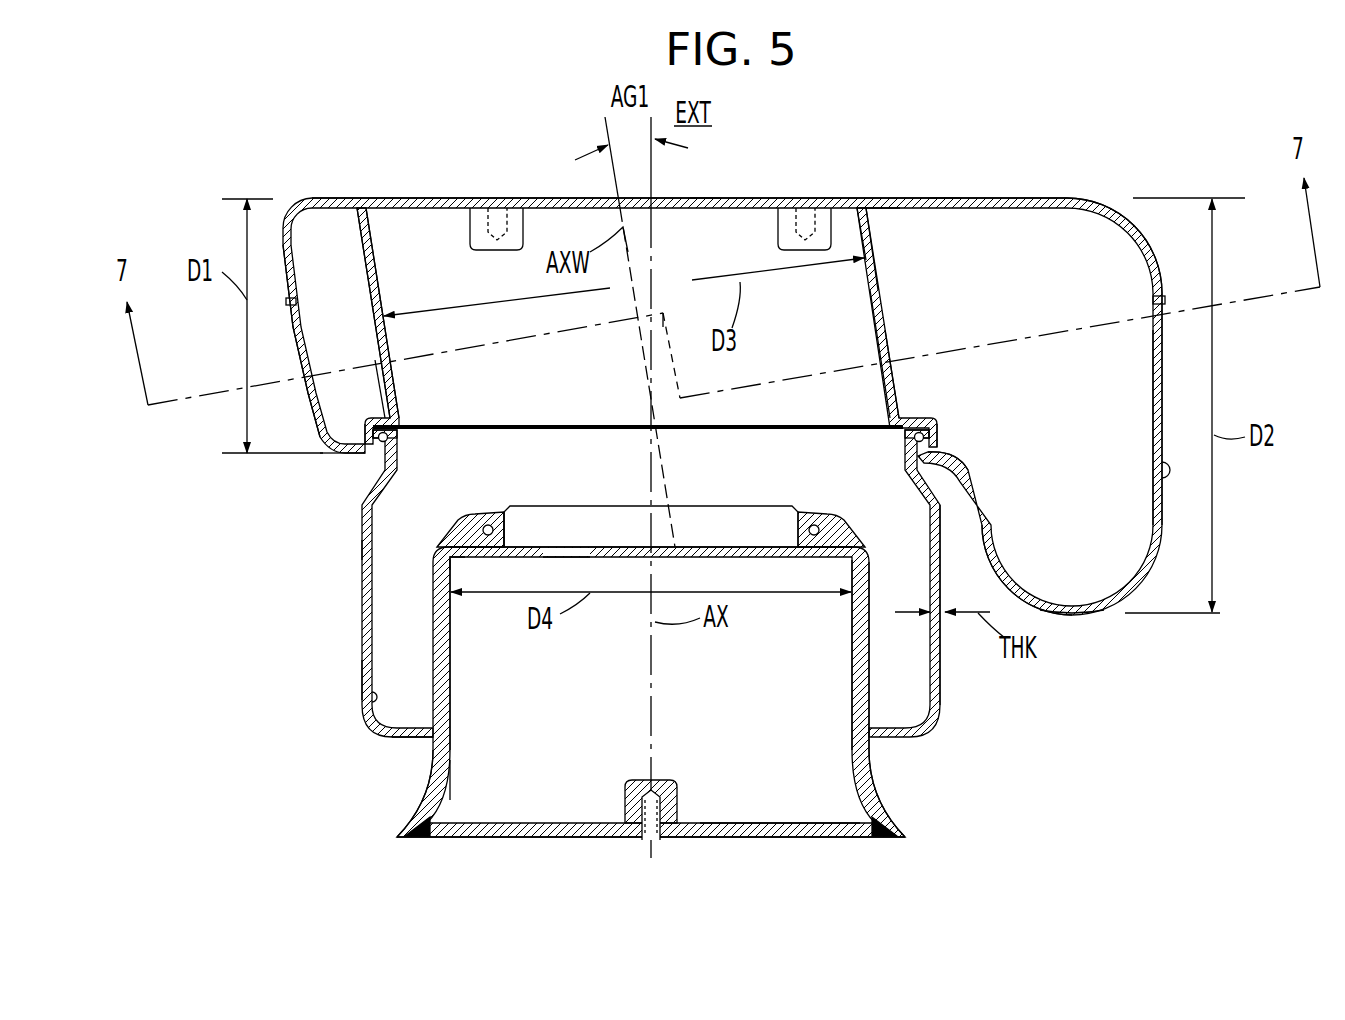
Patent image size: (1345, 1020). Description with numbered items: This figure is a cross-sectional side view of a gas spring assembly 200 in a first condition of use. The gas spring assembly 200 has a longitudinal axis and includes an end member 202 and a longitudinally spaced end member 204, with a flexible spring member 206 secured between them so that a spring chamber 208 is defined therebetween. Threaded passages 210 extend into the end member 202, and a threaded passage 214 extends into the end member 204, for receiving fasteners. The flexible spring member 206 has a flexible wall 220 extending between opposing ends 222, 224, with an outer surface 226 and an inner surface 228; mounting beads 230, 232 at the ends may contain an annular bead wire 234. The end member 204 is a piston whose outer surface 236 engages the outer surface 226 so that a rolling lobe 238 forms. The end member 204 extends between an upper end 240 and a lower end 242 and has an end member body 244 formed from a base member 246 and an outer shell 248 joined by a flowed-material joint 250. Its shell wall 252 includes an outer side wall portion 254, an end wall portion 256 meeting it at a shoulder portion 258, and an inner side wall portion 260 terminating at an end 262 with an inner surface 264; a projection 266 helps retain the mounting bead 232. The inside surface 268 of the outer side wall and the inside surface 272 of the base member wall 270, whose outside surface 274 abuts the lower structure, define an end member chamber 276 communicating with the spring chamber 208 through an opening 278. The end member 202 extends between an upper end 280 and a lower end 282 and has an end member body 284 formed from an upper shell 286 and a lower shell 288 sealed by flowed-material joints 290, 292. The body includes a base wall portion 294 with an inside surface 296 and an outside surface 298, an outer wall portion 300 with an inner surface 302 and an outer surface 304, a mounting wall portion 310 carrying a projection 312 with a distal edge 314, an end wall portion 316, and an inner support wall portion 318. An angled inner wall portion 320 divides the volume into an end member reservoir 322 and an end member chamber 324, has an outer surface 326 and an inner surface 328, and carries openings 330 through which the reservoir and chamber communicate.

The gas spring assembly 200 is at (1124, 168).
The end member 202 is at (1063, 192).
The end member 204 is at (920, 794).
The flexible spring member 206 is at (972, 690).
The spring chamber 208 is at (364, 548).
The threaded passages 210 is at (494, 206).
The threaded passage 214 is at (645, 838).
The flexible wall 220 is at (416, 522).
The end 222 is at (450, 440).
The end 224 is at (860, 478).
The outer surface 226 is at (358, 678).
The inner surface 228 is at (372, 705).
The mounting bead 230 is at (430, 455).
The mounting bead 232 is at (848, 520).
The bead wire 234 is at (400, 431).
The outer surface 236 is at (418, 792).
The rolling lobe 238 is at (392, 734).
The upper end 240 is at (416, 576).
The lower end 242 is at (398, 829).
The end member body 244 is at (470, 802).
The base member 246 is at (770, 838).
The outer shell 248 is at (878, 768).
The flowed-material joint 250 is at (890, 838).
The shell wall 252 is at (852, 738).
The outer side wall portion 254 is at (855, 650).
The end wall portion 256 is at (625, 546).
The shoulder portion 258 is at (452, 558).
The inner side wall portion 260 is at (792, 527).
The end 262 is at (690, 505).
The inner surface 264 is at (509, 507).
The projection 266 is at (486, 522).
The inside surface 268 is at (449, 716).
The base member wall 270 is at (712, 838).
The inside surface 272 is at (840, 836).
The outside surface 274 is at (560, 838).
The end member chamber 276 is at (421, 836).
The opening 278 is at (572, 552).
The upper end 280 is at (280, 176).
The lower end 282 is at (324, 462).
The end member body 284 is at (1030, 196).
The upper shell 286 is at (1124, 238).
The lower shell 288 is at (1150, 368).
The flowed-material joint 290 is at (290, 306).
The flowed-material joint 292 is at (375, 282).
The base wall portion 294 is at (700, 198).
The inside surface 296 is at (880, 206).
The outside surface 298 is at (945, 198).
The outer wall portion 300 is at (1156, 445).
The inner surface 302 is at (1152, 425).
The outer surface 304 is at (1163, 474).
The mounting wall portion 310 is at (328, 425).
The projection 312 is at (928, 446).
The distal edge 314 is at (952, 458).
The end wall portion 316 is at (359, 458).
The inner support wall portion 318 is at (990, 538).
The inner wall portion 320 is at (360, 258).
The end member reservoir 322 is at (328, 238).
The end member chamber 324 is at (421, 236).
The outer surface 326 is at (868, 260).
The inner surface 328 is at (866, 272).
The openings 330 is at (380, 358).